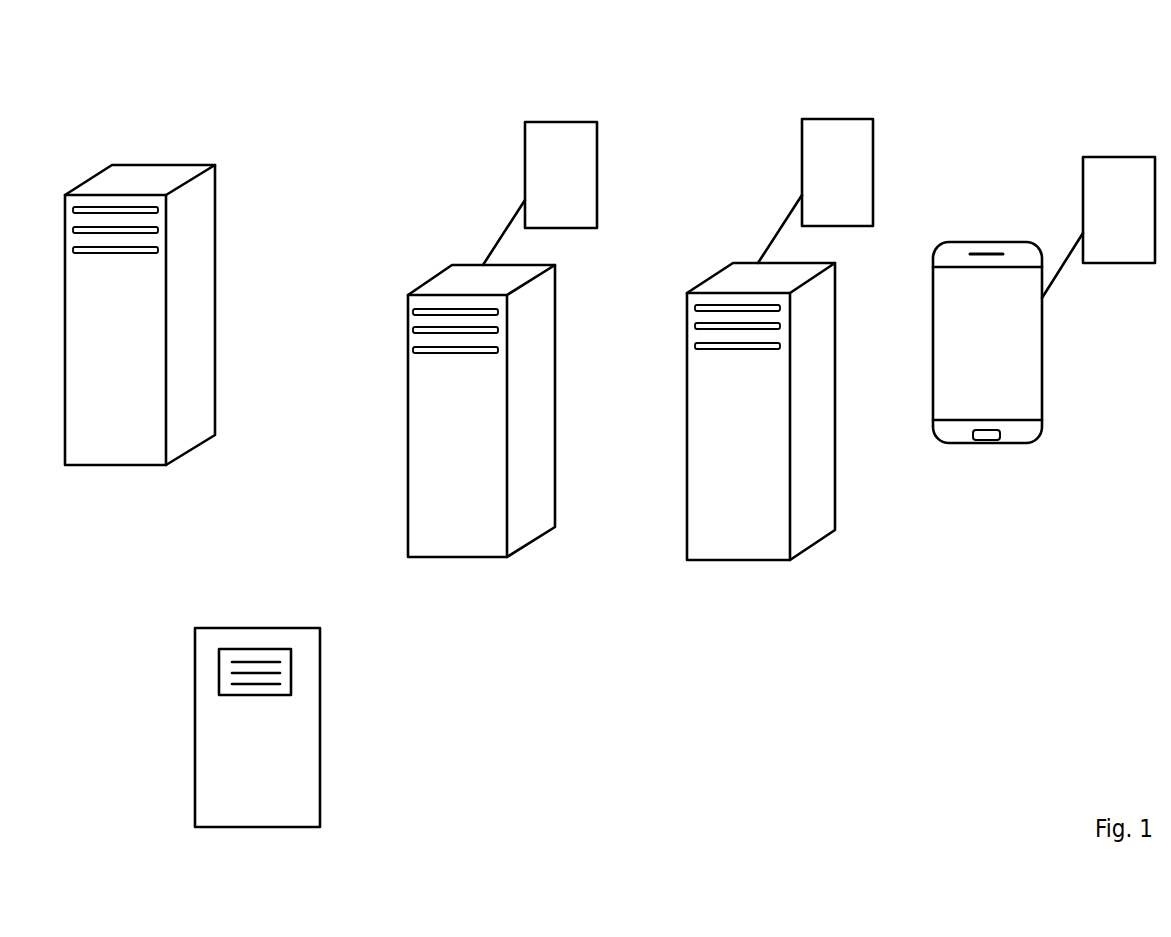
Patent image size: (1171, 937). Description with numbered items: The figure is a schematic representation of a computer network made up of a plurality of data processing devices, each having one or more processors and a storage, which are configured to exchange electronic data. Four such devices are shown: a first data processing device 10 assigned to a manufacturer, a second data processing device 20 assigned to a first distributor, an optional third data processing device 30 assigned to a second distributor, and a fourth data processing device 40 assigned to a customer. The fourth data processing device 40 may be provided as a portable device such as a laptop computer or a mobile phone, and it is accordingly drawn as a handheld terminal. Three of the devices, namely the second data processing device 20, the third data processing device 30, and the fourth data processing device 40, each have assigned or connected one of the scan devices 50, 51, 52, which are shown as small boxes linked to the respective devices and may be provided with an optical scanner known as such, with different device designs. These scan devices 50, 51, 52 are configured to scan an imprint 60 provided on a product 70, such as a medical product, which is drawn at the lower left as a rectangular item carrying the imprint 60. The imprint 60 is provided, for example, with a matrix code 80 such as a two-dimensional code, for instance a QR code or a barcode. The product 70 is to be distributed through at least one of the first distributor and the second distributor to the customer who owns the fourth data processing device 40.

The first data processing device 10 is at (120, 463).
The second data processing device 20 is at (452, 558).
The third data processing device 30 is at (748, 561).
The fourth data processing device 40 is at (965, 445).
The scan device 50 is at (563, 133).
The scan device 51 is at (833, 142).
The scan device 52 is at (1121, 173).
The imprint 60 is at (292, 675).
The product 70 is at (303, 795).
The matrix code 80 is at (230, 668).